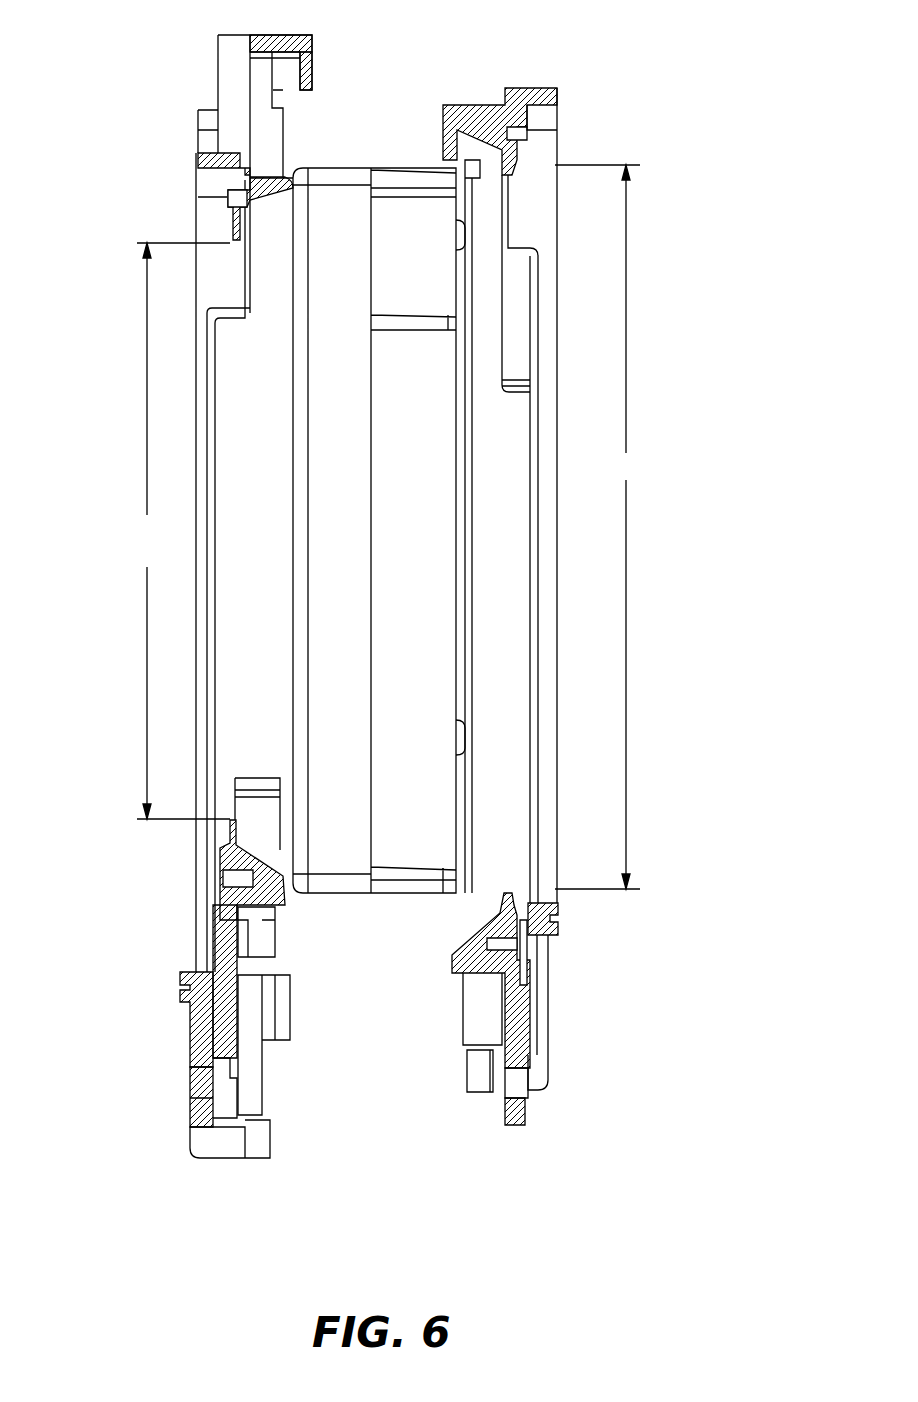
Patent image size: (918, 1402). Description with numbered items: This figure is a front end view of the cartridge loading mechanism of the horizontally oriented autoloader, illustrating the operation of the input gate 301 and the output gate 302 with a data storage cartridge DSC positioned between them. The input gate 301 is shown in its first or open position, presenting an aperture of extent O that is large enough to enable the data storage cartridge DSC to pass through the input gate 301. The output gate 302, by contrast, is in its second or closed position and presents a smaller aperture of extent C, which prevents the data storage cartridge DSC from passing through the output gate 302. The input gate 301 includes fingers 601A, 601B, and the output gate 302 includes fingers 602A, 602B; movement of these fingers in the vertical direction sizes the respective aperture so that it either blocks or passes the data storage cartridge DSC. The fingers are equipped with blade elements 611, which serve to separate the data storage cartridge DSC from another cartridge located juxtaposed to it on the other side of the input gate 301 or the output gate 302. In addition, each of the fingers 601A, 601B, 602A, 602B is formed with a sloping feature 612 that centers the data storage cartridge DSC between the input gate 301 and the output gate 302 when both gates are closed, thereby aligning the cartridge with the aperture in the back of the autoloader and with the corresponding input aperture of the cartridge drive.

The data storage cartridge DSC is at (345, 205).
The finger 601A is at (487, 105).
The finger 601B is at (492, 997).
The finger 602A is at (198, 157).
The finger 602B is at (287, 905).
The input gate 301 is at (548, 115).
The output gate 302 is at (190, 173).
The blade element 611 is at (560, 165).
The sloping feature 612 is at (465, 948).
The aperture extent C is at (183, 531).
The aperture extent O is at (597, 527).